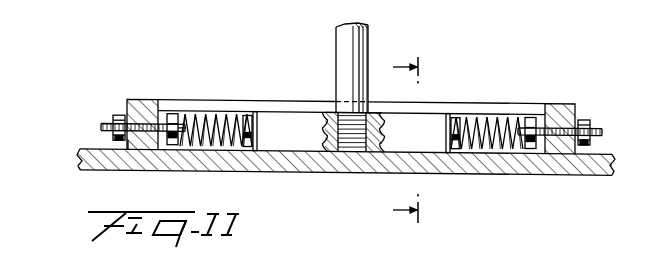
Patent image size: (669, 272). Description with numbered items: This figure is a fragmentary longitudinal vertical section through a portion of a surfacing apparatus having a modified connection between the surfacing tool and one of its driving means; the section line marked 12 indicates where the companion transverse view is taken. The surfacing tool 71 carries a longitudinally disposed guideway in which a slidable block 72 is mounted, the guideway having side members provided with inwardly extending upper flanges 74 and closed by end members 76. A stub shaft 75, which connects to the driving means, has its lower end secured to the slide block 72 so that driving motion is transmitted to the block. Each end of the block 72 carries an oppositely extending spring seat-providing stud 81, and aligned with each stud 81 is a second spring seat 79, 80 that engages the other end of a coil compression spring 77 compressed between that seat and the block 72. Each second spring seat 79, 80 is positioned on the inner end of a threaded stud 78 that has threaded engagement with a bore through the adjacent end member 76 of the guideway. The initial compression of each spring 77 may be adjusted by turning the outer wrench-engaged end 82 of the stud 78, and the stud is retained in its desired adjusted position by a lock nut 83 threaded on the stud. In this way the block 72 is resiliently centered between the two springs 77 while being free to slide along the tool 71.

The surfacing tool 71 is at (283, 165).
The slidable block 72 is at (298, 106).
The inwardly extending upper flanges 74 is at (396, 104).
The stub shaft 75 is at (336, 53).
The end members 76 is at (144, 103).
The coil compression spring 77 is at (205, 118).
The threaded stud 78 is at (115, 142).
The second spring seat 79 is at (169, 145).
The second spring seat 80 is at (193, 137).
The spring seat-providing stud 81 is at (250, 112).
The wrench-engaged end 82 is at (104, 126).
The lock nut 83 is at (117, 113).
The section line 12- 12 is at (417, 140).